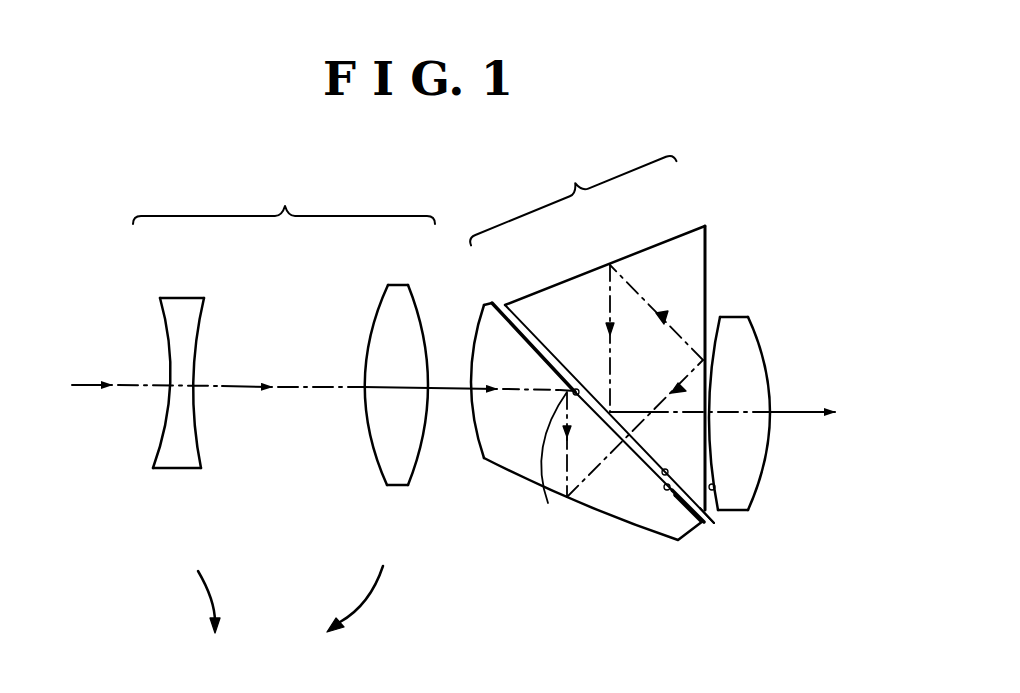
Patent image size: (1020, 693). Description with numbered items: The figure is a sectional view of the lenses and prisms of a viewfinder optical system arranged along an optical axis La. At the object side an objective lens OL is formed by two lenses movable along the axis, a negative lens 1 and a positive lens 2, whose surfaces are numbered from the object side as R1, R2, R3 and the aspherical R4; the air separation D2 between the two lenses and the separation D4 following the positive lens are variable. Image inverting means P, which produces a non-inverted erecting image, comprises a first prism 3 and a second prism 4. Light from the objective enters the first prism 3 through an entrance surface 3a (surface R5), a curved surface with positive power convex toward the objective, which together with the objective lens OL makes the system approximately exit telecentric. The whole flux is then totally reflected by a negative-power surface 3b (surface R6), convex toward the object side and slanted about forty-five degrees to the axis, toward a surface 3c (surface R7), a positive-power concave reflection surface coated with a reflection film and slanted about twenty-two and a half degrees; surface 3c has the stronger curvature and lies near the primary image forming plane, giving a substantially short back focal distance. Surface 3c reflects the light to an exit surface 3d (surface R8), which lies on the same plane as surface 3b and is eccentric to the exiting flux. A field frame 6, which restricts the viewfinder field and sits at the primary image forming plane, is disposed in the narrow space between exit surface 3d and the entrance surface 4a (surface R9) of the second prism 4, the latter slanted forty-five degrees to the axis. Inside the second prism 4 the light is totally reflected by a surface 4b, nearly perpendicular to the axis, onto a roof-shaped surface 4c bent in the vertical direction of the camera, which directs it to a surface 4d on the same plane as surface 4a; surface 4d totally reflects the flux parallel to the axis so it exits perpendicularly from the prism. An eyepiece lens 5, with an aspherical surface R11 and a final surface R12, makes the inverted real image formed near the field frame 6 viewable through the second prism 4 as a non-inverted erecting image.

The negative lens 1 is at (179, 388).
The positive lens 2 is at (390, 357).
The objective lens OL is at (284, 330).
The image inverting means P is at (642, 379).
The first prism 3 is at (562, 460).
The entrance surface 3a is at (452, 421).
The negative-power reflection surface 3b is at (598, 460).
The positive-power reflection surface 3c is at (589, 510).
The exit surface 3d is at (662, 472).
The second prism 4 is at (671, 348).
The entrance surface 4a is at (596, 377).
The surface 4b is at (785, 368).
The roof-shaped surface 4c is at (668, 241).
The surface 4d is at (533, 334).
The eyepiece lens 5 is at (776, 425).
The field frame 6 is at (706, 522).
The optical axis La is at (80, 390).
The variable air separation D2 is at (265, 368).
The variable air separation D4 is at (463, 378).
The radius of curvature of first surface R1 is at (163, 433).
The radius of curvature of second surface R2 is at (197, 420).
The radius of curvature of third surface R3 is at (373, 465).
The radius of curvature of fourth surface R4 is at (425, 333).
The radius of curvature of fifth surface R5 is at (476, 433).
The radius of curvature of sixth surface R6 is at (548, 503).
The radius of curvature of seventh surface R7 is at (505, 470).
The radius of curvature of eighth surface R8 is at (667, 490).
The radius of curvature of ninth surface R9 is at (712, 513).
The radius of curvature of eleventh surface R11 is at (715, 487).
The radius of curvature of twelfth surface R12 is at (768, 450).